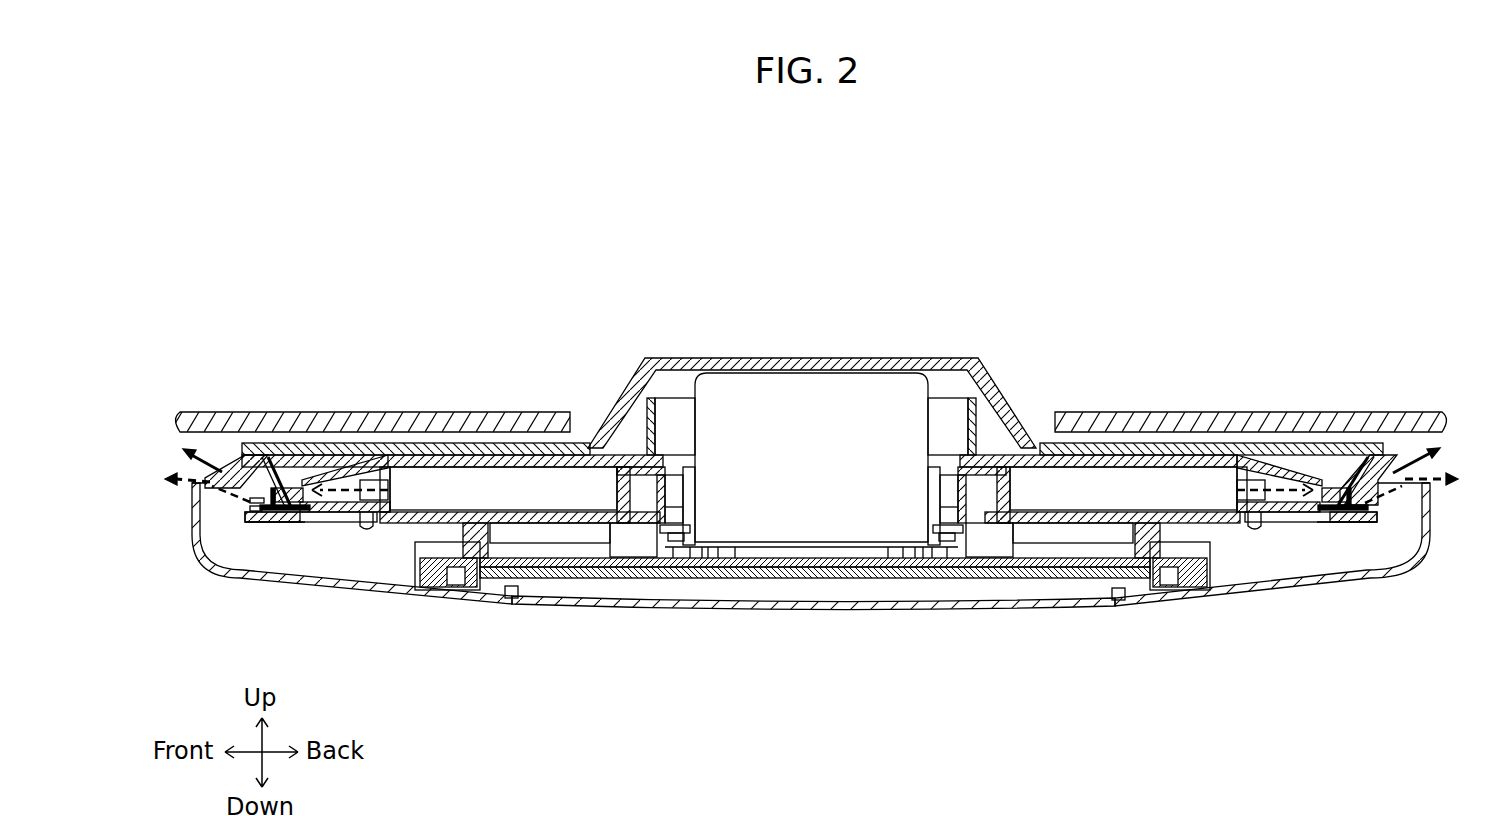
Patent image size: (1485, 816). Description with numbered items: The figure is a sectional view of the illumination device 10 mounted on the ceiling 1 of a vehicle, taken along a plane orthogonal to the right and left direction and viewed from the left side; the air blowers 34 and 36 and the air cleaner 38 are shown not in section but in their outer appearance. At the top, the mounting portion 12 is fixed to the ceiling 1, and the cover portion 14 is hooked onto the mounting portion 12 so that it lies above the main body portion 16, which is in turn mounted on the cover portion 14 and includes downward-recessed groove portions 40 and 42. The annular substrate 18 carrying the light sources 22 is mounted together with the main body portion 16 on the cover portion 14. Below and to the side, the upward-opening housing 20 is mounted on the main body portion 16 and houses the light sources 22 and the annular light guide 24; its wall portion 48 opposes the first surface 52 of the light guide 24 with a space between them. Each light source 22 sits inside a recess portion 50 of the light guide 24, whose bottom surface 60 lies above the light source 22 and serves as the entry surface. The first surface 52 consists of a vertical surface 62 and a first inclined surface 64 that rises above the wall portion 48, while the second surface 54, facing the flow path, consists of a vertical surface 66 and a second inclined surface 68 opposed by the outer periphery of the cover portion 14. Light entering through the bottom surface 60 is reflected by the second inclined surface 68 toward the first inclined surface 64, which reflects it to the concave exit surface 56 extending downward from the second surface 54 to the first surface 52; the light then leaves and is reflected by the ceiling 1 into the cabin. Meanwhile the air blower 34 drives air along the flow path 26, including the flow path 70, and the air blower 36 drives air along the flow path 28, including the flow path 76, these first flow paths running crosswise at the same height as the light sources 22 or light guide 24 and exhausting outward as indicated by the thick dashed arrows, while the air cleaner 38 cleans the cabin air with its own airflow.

The ceiling 1 is at (418, 424).
The illumination device 10 is at (435, 628).
The mounting portion 12 is at (803, 360).
The cover portion 14 is at (504, 455).
The main body portion 16 is at (399, 537).
The substrate 18 is at (279, 522).
The housing 20 is at (779, 621).
The light source 22 is at (275, 518).
The light guide 24 is at (193, 472).
The flow path 26 is at (387, 471).
The flow path 28 is at (1246, 473).
The air blower 34 is at (466, 488).
The air blower 36 is at (1123, 487).
The air cleaner 38 is at (843, 422).
The groove portion 40 is at (588, 505).
The groove portion 42 is at (1042, 530).
The wall portion 48 is at (186, 484).
The recess portion 50 is at (288, 522).
The first surface 52 is at (185, 526).
The second surface 54 is at (295, 418).
The exit surface 56 is at (235, 470).
The bottom surface 60 is at (262, 518).
The vertical surface 62 is at (257, 510).
The first inclined surface 64 is at (254, 503).
The vertical surface 66 is at (288, 508).
The second inclined surface 68 is at (270, 507).
The flow path 70 is at (362, 468).
The flow path 76 is at (1261, 472).